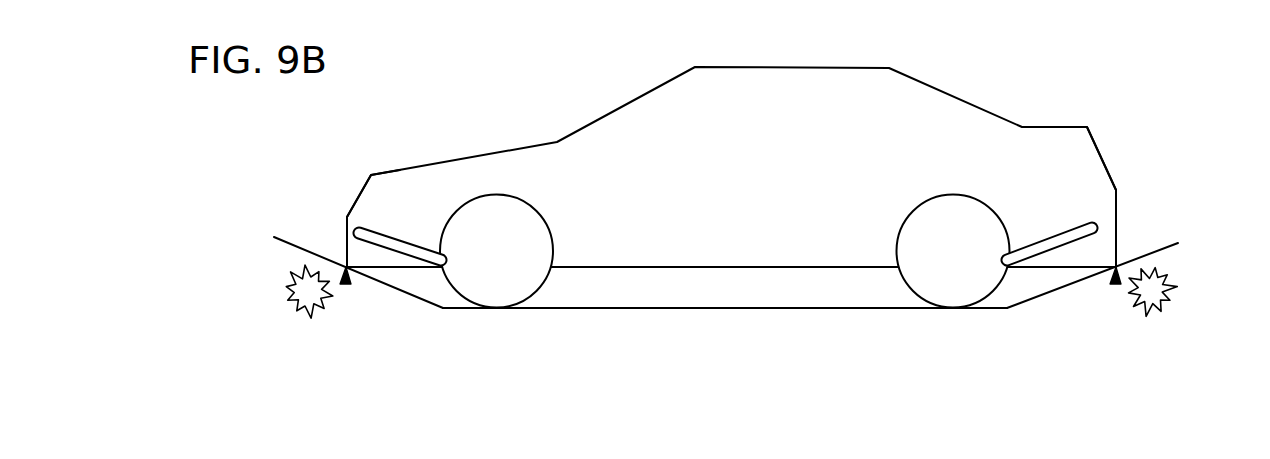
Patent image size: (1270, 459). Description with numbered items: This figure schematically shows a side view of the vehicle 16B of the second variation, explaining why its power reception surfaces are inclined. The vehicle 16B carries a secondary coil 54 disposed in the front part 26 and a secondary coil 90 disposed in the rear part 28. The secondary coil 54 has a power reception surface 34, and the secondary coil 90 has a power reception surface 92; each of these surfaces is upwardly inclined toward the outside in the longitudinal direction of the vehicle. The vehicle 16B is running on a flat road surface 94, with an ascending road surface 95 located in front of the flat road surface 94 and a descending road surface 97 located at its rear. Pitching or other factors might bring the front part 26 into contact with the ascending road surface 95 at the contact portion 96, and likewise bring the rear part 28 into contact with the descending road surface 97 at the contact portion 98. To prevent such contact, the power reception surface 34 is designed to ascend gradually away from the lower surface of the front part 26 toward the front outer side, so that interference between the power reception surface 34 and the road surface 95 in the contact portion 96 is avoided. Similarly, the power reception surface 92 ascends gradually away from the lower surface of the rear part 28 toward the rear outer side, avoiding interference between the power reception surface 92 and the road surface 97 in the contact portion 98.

The vehicle 16B is at (793, 83).
The front part 26 is at (377, 193).
The rear part 28 is at (1103, 206).
The power reception surface 34 is at (403, 268).
The secondary coil 54 is at (407, 247).
The secondary coil 90 is at (1043, 247).
The power reception surface 92 is at (1048, 268).
The flat road surface 94 is at (718, 308).
The ascending road surface 95 is at (288, 238).
The contact portion 96 is at (345, 284).
The descending road surface 97 is at (1160, 244).
The contact portion 98 is at (1115, 284).